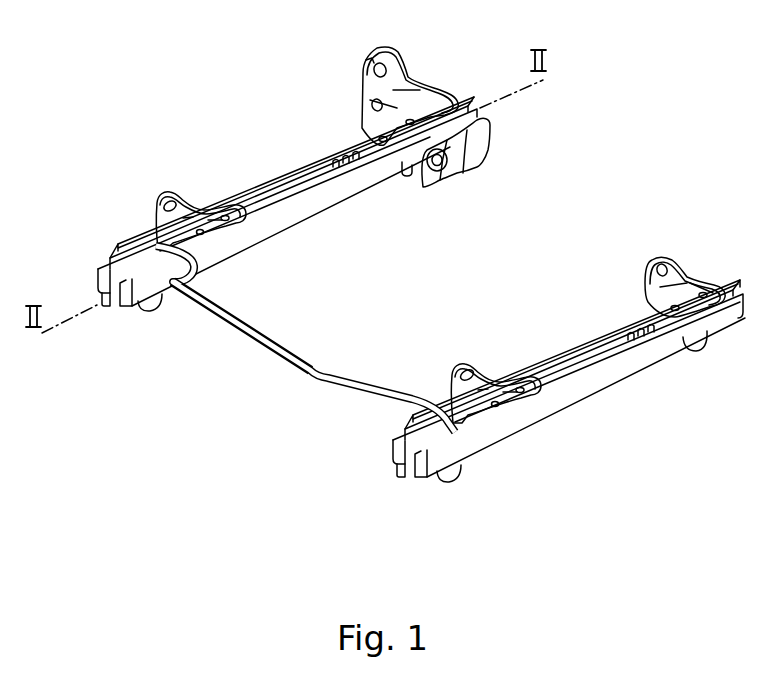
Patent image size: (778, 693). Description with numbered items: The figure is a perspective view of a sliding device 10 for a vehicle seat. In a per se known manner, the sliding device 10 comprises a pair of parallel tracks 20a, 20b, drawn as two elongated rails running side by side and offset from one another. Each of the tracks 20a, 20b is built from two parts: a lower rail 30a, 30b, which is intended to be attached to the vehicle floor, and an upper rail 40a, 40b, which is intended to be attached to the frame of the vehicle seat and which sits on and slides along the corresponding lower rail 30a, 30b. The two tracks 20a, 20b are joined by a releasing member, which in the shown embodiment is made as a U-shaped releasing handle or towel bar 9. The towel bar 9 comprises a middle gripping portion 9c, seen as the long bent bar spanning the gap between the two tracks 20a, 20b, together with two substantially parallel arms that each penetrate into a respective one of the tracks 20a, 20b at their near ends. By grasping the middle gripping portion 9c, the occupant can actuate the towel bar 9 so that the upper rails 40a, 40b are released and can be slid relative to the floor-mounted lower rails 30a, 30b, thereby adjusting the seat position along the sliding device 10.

The sliding device 10 is at (587, 201).
The track 20a is at (318, 121).
The track 20b is at (557, 426).
The lower rail 30a is at (110, 260).
The lower rail 30b is at (406, 481).
The upper rail 40a is at (293, 186).
The upper rail 40b is at (595, 352).
The releasing handle 9 is at (307, 341).
The middle gripping portion 9c is at (258, 344).